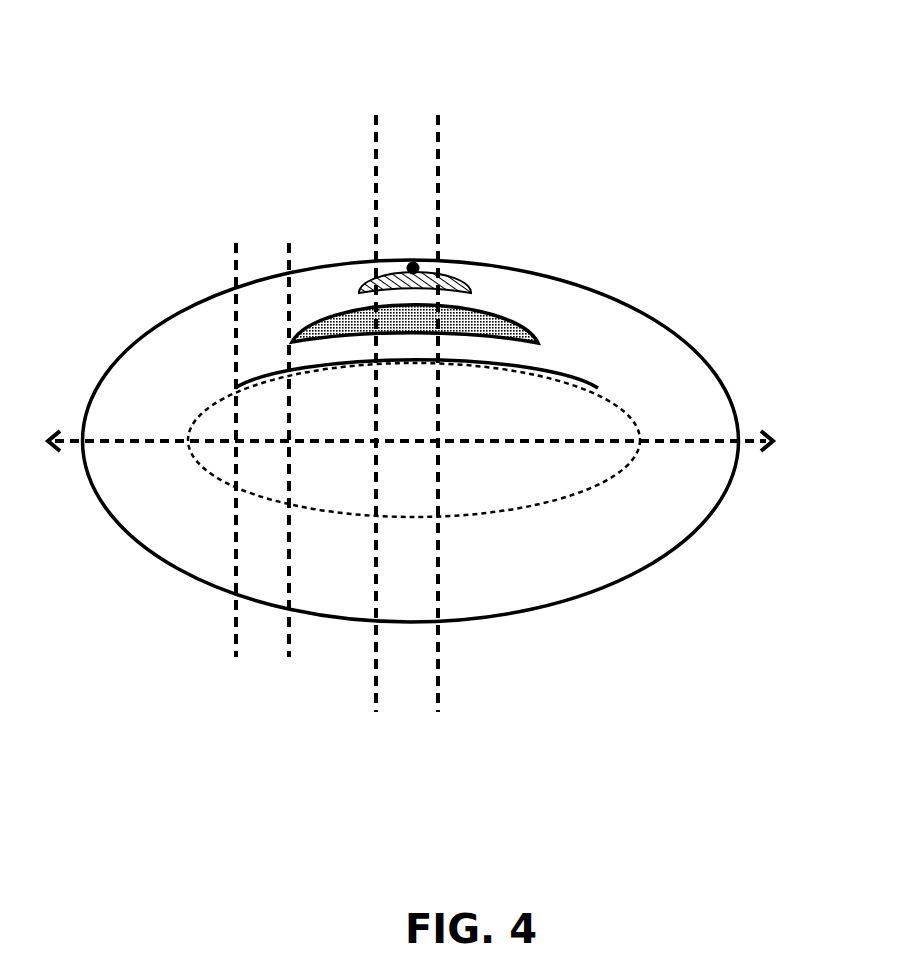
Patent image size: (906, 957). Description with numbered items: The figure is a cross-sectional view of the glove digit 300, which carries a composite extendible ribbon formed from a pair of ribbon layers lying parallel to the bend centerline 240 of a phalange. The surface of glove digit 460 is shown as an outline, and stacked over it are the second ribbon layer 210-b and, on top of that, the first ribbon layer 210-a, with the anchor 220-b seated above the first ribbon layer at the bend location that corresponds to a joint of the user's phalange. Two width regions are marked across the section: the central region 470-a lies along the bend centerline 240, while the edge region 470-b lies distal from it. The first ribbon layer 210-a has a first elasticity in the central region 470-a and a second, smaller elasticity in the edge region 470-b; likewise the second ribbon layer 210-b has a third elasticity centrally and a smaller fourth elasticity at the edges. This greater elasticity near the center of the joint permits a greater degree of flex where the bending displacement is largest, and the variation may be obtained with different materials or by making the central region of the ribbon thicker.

The glove digit 300 is at (100, 26).
The bend centerline 240 is at (413, 264).
The anchor 220-b is at (452, 283).
The first ribbon layer 210-a is at (488, 318).
The second ribbon layer 210-b is at (557, 366).
The surface of glove digit 460 is at (538, 505).
The central region 470-a is at (382, 719).
The edge region 470-b is at (240, 668).